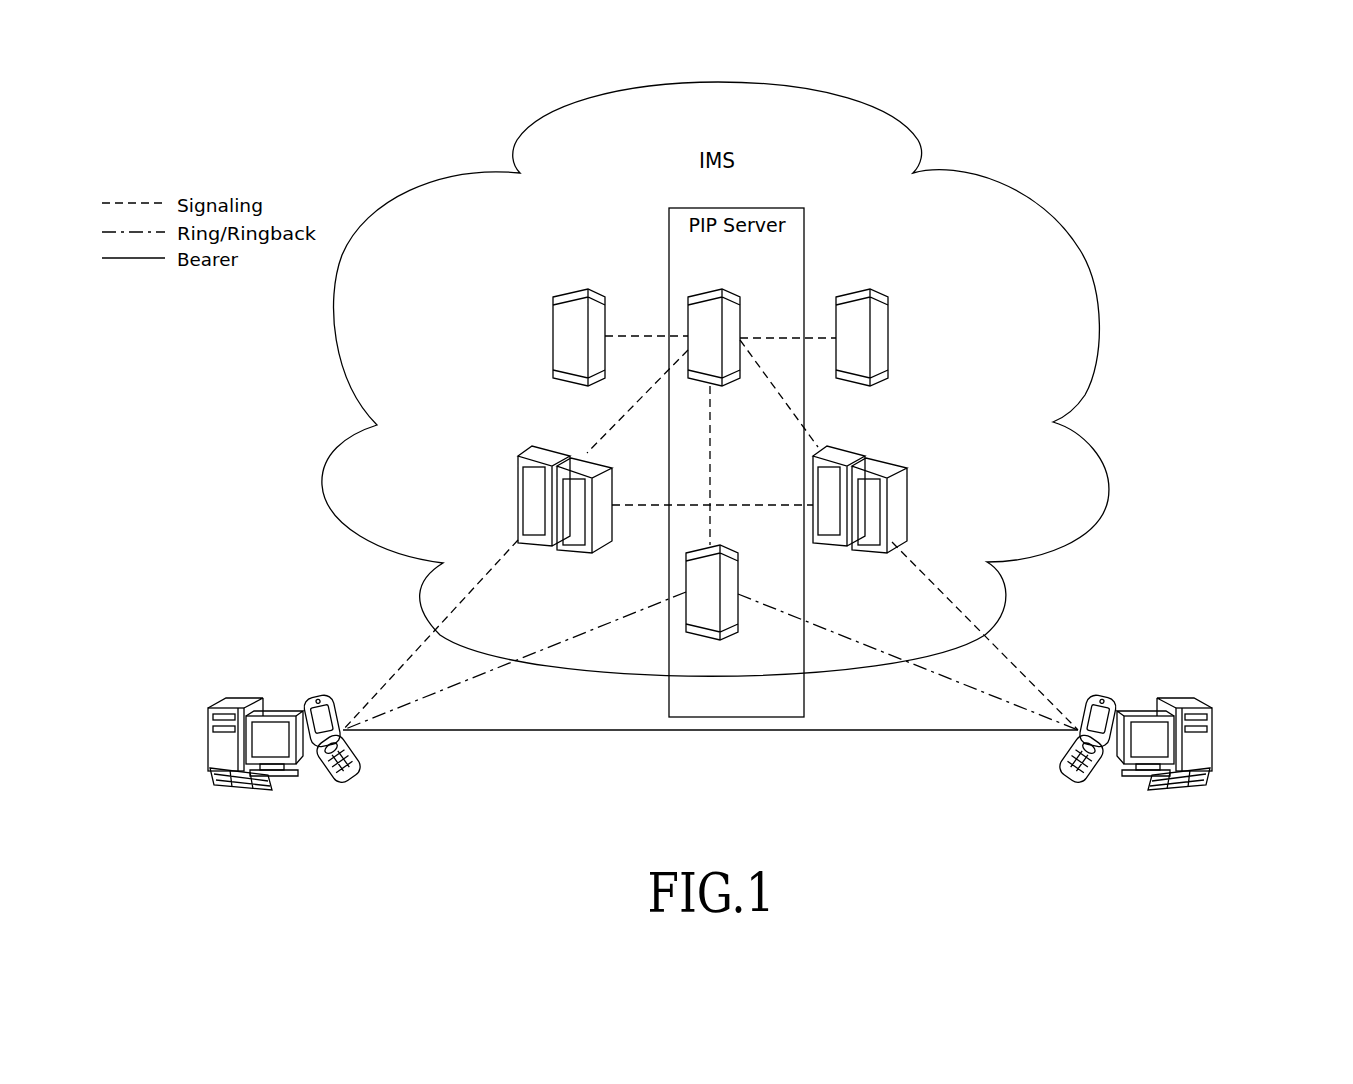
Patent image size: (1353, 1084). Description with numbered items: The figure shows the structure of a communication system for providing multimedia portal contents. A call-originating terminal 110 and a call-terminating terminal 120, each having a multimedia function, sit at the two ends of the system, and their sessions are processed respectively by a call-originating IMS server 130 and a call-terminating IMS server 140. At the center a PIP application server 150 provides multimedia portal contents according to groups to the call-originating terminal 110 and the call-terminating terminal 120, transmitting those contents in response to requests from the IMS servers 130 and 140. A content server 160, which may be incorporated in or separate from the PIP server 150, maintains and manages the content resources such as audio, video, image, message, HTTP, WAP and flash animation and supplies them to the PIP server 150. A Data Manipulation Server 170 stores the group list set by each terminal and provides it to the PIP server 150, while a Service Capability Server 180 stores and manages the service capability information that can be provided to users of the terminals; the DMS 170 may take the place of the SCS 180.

The call-originating terminal 110 is at (293, 774).
The call-terminating terminal 120 is at (1137, 774).
The call-originating IMS server 130 is at (555, 447).
The call-terminating IMS server 140 is at (887, 457).
The PIP application server 150 is at (709, 289).
The content server 160 is at (740, 566).
The Data Manipulation Server 170 is at (574, 289).
The Service Capability Server 180 is at (855, 289).